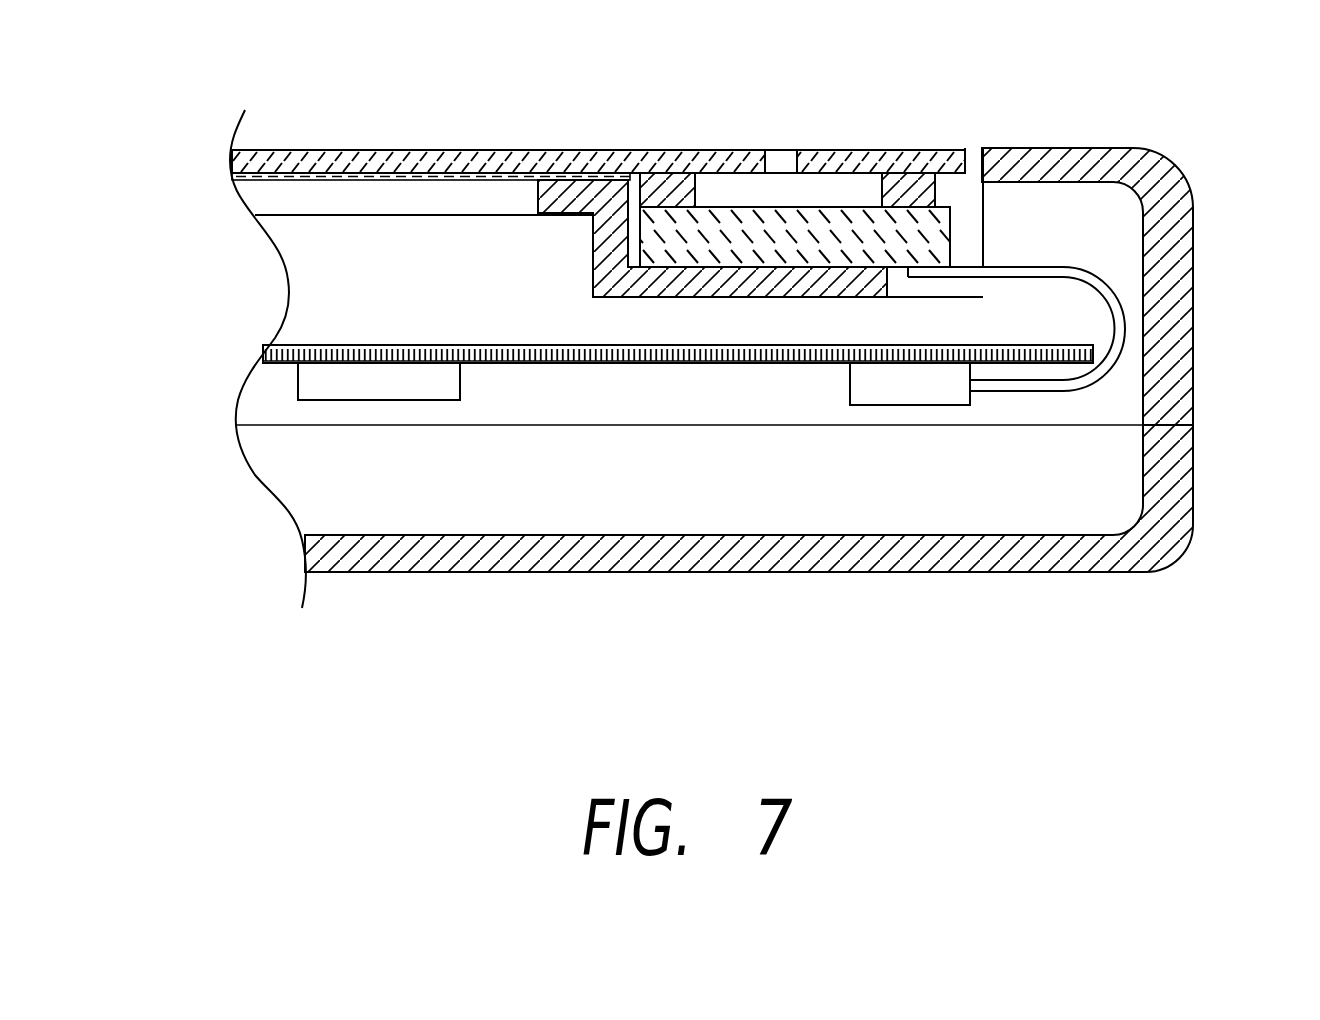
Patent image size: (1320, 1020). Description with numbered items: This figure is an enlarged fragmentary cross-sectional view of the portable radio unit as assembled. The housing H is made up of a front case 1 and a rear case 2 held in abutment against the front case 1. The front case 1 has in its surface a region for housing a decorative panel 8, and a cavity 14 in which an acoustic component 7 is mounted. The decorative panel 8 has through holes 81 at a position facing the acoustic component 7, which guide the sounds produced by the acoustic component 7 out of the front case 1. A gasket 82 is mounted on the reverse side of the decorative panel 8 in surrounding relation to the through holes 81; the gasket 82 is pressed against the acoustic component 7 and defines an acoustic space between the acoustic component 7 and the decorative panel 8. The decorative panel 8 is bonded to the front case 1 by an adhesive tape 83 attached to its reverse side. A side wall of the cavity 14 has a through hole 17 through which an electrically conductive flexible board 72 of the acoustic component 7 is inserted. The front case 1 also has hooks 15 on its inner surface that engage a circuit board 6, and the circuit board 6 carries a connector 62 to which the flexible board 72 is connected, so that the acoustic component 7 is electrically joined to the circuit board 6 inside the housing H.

The front case 1 is at (1188, 178).
The rear case 2 is at (1173, 553).
The circuit board 6 is at (350, 345).
The acoustic component 7 is at (950, 237).
The decorative panel 8 is at (437, 150).
The cavity 14 is at (756, 190).
The hooks 15 is at (312, 389).
The through hole 17 is at (963, 203).
The connector 62 is at (940, 408).
The flexible board 72 is at (1133, 316).
The through holes 81 is at (778, 150).
The gasket 82 is at (677, 165).
The adhesive tape 83 is at (297, 183).
The housing H is at (1197, 398).